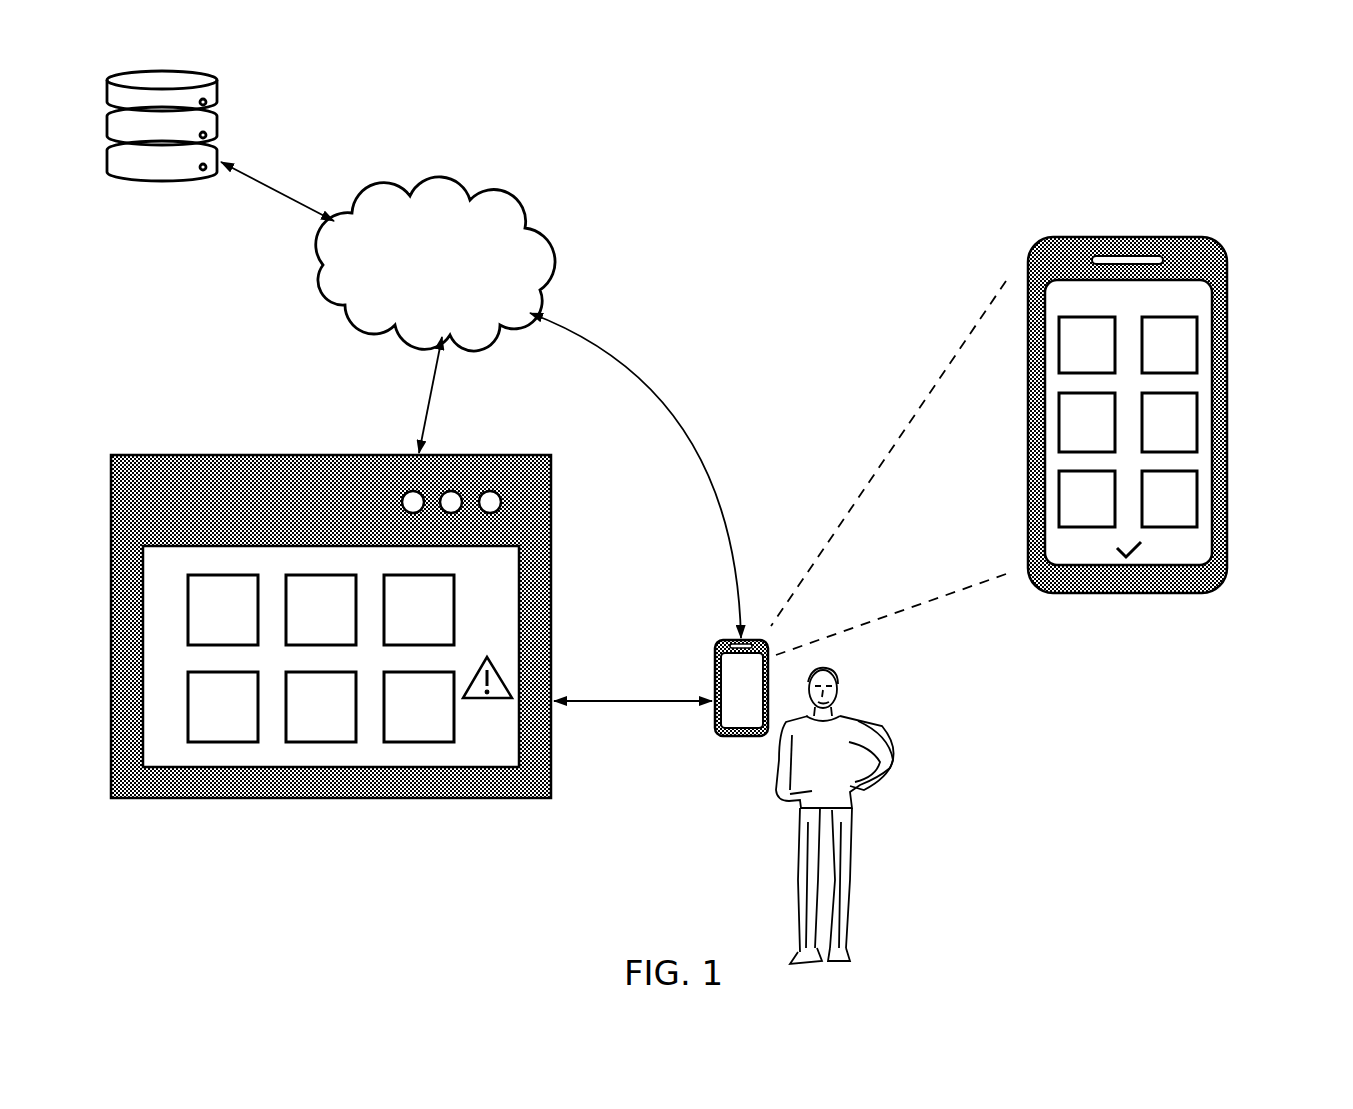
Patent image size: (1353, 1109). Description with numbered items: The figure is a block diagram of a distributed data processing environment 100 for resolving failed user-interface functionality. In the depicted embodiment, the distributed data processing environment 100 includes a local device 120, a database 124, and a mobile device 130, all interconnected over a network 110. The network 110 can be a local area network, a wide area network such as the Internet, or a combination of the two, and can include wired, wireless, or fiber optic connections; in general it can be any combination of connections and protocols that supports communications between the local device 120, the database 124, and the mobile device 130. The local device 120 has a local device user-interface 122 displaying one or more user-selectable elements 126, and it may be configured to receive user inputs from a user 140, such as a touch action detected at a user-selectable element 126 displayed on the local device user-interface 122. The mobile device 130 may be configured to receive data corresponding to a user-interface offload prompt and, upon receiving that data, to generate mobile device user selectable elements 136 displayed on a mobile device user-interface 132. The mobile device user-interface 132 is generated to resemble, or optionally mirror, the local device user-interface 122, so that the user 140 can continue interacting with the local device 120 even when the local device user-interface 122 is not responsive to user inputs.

The distributed data processing environment 100 is at (1082, 150).
The network 110 is at (411, 292).
The local device 120 is at (370, 626).
The local device user-interface 122 is at (386, 656).
The database 124 is at (219, 91).
The user-selectable element 126 is at (438, 687).
The mobile device 130 is at (738, 738).
The mobile device user-interface 132 is at (1166, 415).
The mobile device user selectable elements 136 is at (1182, 347).
The user 140 is at (840, 677).